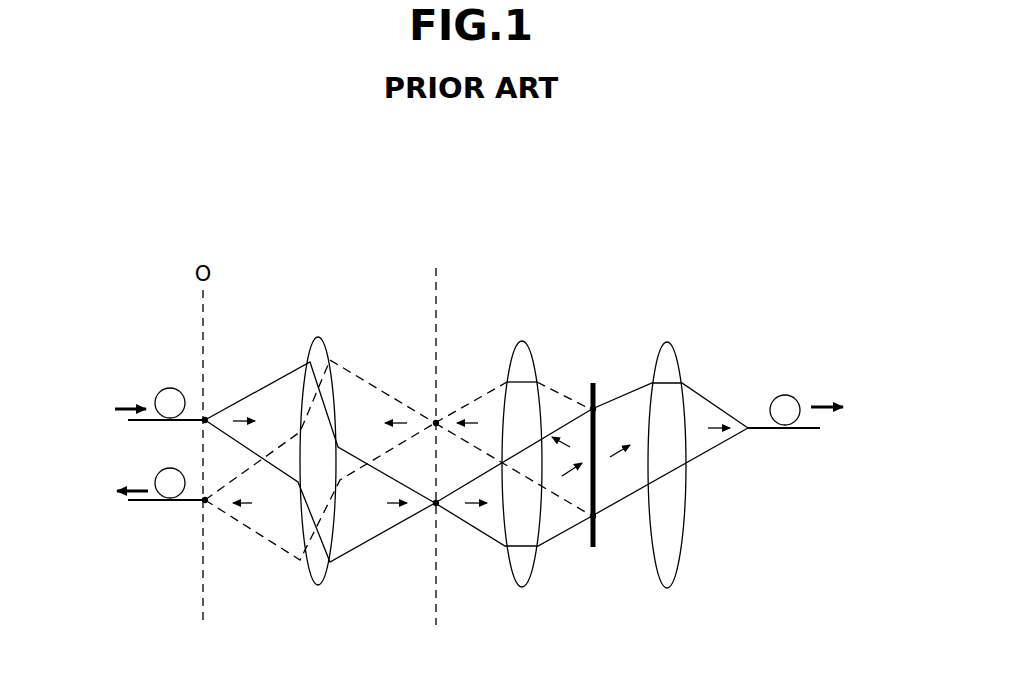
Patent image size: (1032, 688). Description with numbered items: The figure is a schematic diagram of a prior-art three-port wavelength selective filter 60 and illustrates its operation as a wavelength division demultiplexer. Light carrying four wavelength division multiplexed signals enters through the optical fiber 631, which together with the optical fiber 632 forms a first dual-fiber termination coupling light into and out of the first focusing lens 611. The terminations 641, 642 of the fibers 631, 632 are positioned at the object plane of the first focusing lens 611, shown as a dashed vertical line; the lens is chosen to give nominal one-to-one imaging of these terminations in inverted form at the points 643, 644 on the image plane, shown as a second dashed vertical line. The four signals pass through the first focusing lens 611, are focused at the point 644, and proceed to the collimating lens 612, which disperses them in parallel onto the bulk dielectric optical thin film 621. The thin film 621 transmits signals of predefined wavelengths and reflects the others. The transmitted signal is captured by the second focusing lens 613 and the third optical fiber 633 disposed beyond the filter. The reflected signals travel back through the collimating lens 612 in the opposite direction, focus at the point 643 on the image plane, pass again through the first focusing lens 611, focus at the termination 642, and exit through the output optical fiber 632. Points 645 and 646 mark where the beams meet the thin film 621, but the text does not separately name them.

The three-port wavelength selective filter 60 is at (477, 231).
The first focusing lens 611 is at (320, 342).
The collimating lens 612 is at (522, 342).
The second focusing lens 613 is at (668, 342).
The bulk dielectric optical thin film 621 is at (593, 547).
The optical fiber 631 is at (128, 420).
The optical fiber 632 is at (128, 500).
The third optical fiber 633 is at (820, 428).
The termination 641 is at (210, 415).
The termination 642 is at (205, 505).
The inverted image of termination 643 is at (440, 420).
The inverted image of termination 644 is at (437, 508).
The incident point on filter 645 is at (588, 520).
The reflection point on filter 646 is at (597, 407).